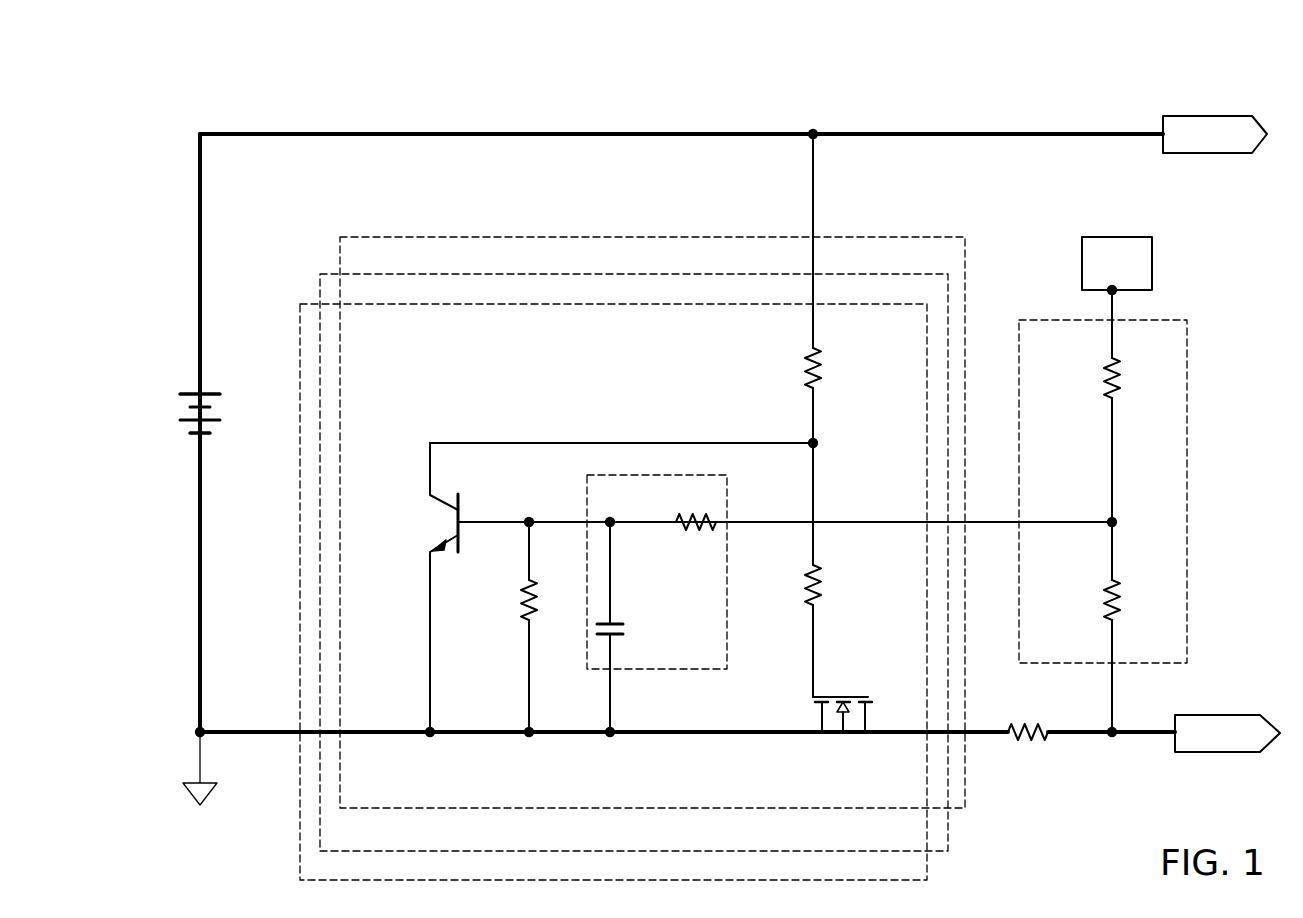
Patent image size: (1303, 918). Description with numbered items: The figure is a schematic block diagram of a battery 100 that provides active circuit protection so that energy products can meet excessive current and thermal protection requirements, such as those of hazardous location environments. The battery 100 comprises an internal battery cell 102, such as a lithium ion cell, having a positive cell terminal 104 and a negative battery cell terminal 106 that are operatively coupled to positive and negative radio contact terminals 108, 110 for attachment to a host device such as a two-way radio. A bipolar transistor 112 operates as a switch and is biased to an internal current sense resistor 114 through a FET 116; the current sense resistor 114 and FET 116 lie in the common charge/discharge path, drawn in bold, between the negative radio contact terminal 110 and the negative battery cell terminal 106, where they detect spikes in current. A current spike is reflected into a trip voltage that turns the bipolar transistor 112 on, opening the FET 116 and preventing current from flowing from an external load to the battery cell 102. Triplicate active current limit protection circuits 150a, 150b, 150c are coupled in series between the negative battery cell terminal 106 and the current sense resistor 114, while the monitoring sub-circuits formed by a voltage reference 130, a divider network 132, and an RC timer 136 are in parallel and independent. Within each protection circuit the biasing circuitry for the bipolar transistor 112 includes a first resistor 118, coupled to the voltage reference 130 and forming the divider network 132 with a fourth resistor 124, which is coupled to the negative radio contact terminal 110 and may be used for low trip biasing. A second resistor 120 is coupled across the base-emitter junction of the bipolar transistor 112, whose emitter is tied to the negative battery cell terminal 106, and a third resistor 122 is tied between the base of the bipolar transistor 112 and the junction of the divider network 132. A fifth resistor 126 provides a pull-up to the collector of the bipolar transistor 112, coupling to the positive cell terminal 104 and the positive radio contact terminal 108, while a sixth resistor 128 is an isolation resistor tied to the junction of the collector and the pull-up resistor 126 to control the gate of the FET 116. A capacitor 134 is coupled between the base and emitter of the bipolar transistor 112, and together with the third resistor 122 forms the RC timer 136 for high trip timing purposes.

The battery 100 is at (190, 95).
The battery cell 102 is at (190, 410).
The positive cell terminal 104 is at (186, 394).
The negative battery cell terminal 106 is at (186, 433).
The positive radio contact terminal 108 is at (1206, 116).
The negative radio contact terminal 110 is at (1240, 715).
The bipolar transistor Q1 112 is at (462, 502).
The current sense resistor RP1 114 is at (1047, 725).
The FET 116 is at (818, 740).
The resistor R1 118 is at (1106, 382).
The resistor R2 120 is at (523, 600).
The resistor R3 122 is at (698, 530).
The resistor R4 124 is at (1106, 600).
The resistor R5 126 is at (808, 370).
The resistor R6 128 is at (818, 602).
The voltage reference Vref 130 is at (1112, 237).
The divider network 132 is at (1188, 494).
The capacitor C1 134 is at (622, 623).
The RC timer 136 is at (728, 645).
The active current limit protection circuit 150a is at (432, 237).
The active current limit protection circuit 150b is at (330, 274).
The active current limit protection circuit 150c is at (311, 304).